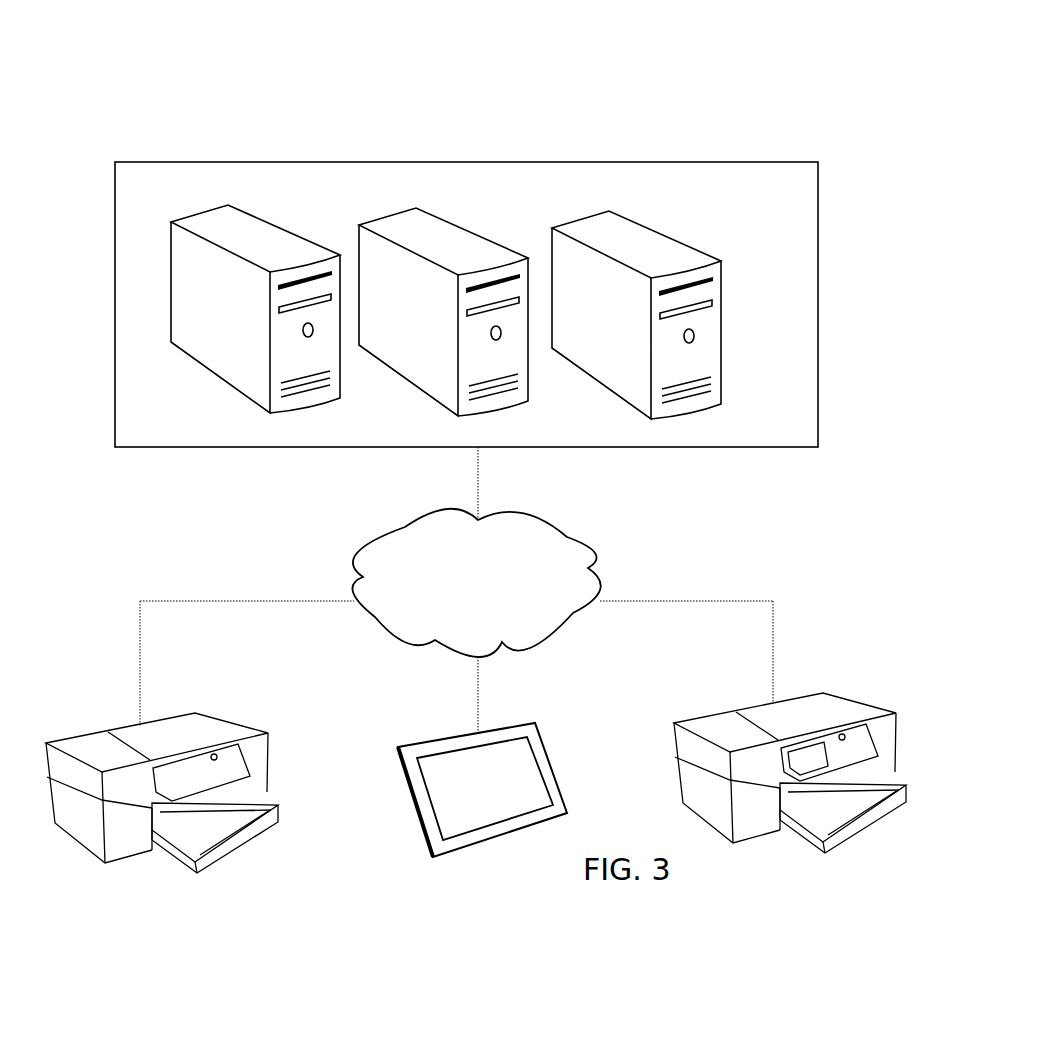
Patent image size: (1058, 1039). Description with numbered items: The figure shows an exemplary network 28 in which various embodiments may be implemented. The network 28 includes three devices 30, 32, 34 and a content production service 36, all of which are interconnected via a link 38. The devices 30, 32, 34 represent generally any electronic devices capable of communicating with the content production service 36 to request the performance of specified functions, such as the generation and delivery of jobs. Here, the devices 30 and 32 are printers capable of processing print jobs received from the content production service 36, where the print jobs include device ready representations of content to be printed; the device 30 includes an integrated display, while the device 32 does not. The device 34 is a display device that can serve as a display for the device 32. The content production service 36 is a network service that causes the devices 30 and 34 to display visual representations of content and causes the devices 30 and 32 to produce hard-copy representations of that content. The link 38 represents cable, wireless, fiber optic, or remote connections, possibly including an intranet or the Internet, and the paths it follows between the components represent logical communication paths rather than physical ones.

The network 28 is at (300, 66).
The device 30 is at (877, 727).
The device 32 is at (253, 747).
The device 34 is at (543, 738).
The content production service 36 is at (818, 222).
The link 38 is at (497, 517).